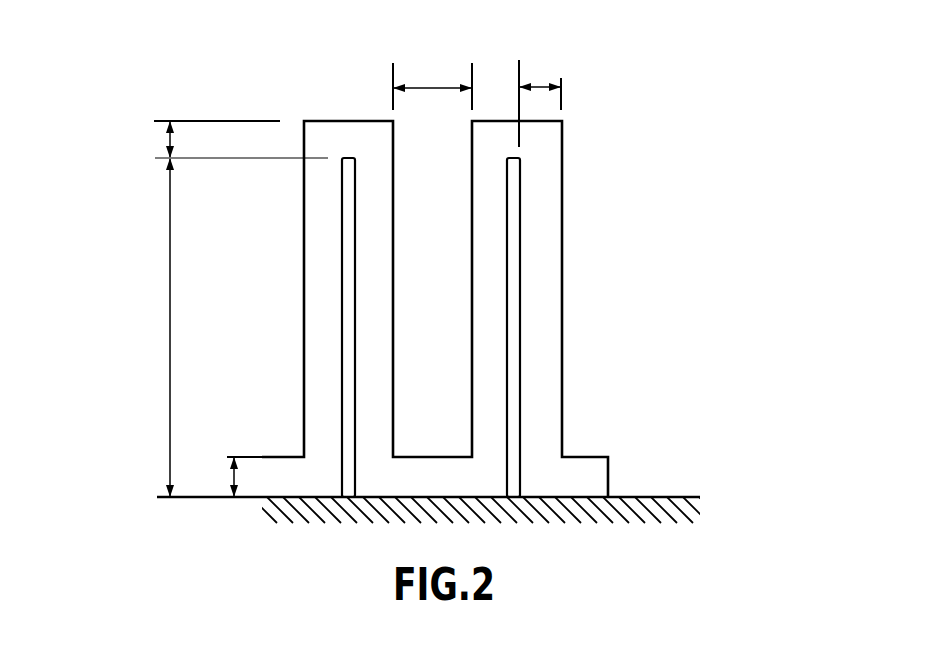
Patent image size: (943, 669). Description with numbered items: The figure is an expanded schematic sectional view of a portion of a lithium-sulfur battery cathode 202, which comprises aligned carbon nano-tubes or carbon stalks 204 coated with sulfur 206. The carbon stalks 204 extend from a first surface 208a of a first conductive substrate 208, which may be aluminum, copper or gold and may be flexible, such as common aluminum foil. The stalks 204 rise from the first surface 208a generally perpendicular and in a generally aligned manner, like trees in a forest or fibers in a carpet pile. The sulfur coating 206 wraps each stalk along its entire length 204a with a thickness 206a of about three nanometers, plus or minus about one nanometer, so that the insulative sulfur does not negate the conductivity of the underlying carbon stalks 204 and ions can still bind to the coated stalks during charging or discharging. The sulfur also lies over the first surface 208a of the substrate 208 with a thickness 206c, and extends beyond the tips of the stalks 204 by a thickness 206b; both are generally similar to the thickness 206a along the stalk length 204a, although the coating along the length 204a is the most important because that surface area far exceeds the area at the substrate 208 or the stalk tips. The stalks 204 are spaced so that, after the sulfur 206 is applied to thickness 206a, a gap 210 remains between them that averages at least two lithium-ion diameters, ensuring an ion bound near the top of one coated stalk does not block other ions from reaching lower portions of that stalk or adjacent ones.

The Li—S battery cathode 202 is at (533, 280).
The carbon stalks 204 is at (522, 296).
The length of the stalks 204a is at (170, 331).
The sulfur coating 206 is at (592, 463).
The thickness of the sulfur about the carbon stalks 206a is at (540, 85).
The thickness of sulfur at the stalk tips 206b is at (170, 136).
The thickness of sulfur over the first surface 206c is at (232, 475).
The first conductive substrate 208 is at (476, 492).
The first surface 208a is at (663, 496).
The gap 210 is at (436, 87).